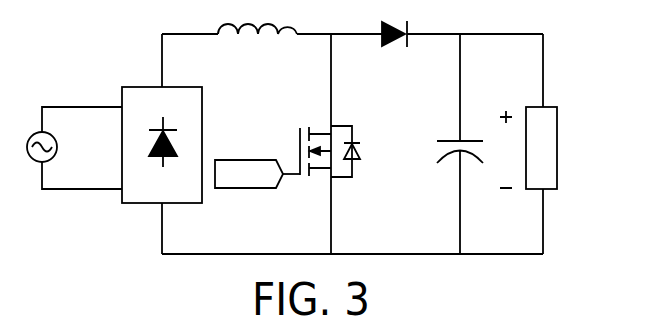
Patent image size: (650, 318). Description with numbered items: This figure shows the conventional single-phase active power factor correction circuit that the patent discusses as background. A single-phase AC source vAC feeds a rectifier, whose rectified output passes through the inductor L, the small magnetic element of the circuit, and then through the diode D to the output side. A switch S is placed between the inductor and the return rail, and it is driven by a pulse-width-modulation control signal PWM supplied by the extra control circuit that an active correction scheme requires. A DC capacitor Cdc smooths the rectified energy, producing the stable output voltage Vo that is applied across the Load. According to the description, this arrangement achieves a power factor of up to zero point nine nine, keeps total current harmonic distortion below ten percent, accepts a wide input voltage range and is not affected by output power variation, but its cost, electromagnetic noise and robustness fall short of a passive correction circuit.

The AC input voltage source vAC is at (74, 148).
The boost inductor L is at (257, 17).
The boost diode D is at (394, 23).
The power switch (MOSFET) S is at (321, 171).
The PWM gate drive signal PWM is at (249, 174).
The DC link capacitor Cdc is at (438, 144).
The output voltage Vo is at (508, 149).
The load Load is at (571, 144).